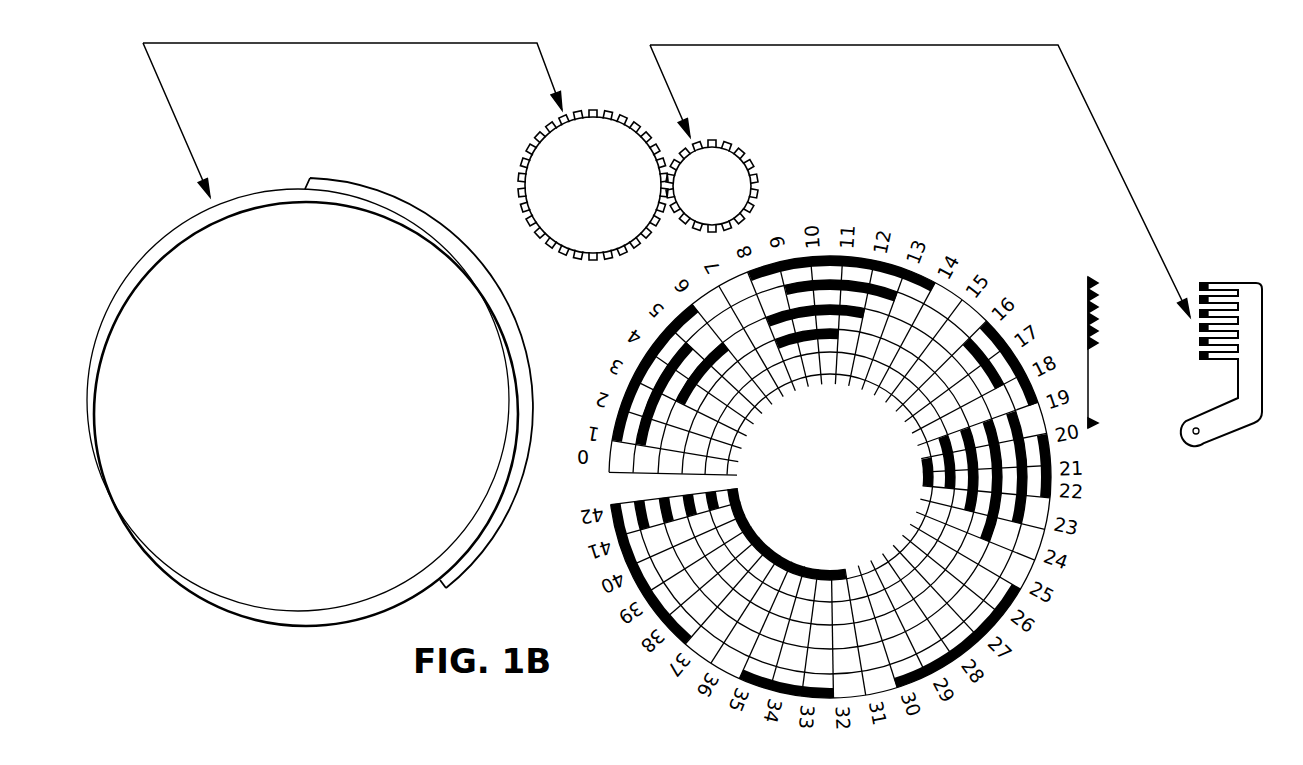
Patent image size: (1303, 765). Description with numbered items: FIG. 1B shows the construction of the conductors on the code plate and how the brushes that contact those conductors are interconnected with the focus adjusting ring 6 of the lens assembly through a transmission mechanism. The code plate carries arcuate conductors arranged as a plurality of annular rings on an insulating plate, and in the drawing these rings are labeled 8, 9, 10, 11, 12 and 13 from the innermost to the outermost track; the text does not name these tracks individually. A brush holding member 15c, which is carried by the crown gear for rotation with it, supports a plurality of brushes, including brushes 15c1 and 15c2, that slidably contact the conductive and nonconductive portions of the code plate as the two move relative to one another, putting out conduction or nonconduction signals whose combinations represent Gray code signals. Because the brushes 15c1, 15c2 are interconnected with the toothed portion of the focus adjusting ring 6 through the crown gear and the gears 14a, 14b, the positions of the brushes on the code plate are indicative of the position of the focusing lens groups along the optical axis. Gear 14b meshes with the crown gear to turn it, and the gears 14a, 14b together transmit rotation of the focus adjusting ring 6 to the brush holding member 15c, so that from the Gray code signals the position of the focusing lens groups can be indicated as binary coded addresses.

The focus adjusting ring 6 is at (310, 402).
The code track 8 is at (830, 477).
The code track 9 is at (828, 477).
The code track 10 is at (830, 477).
The code track 11 is at (773, 477).
The code track 12 is at (784, 477).
The code track 13 is at (794, 477).
The gear 14a is at (732, 178).
The gear 14b is at (573, 185).
The brush holding member 15c is at (1211, 364).
The brush 15c1 is at (1229, 257).
The brush 15c2 is at (1204, 273).